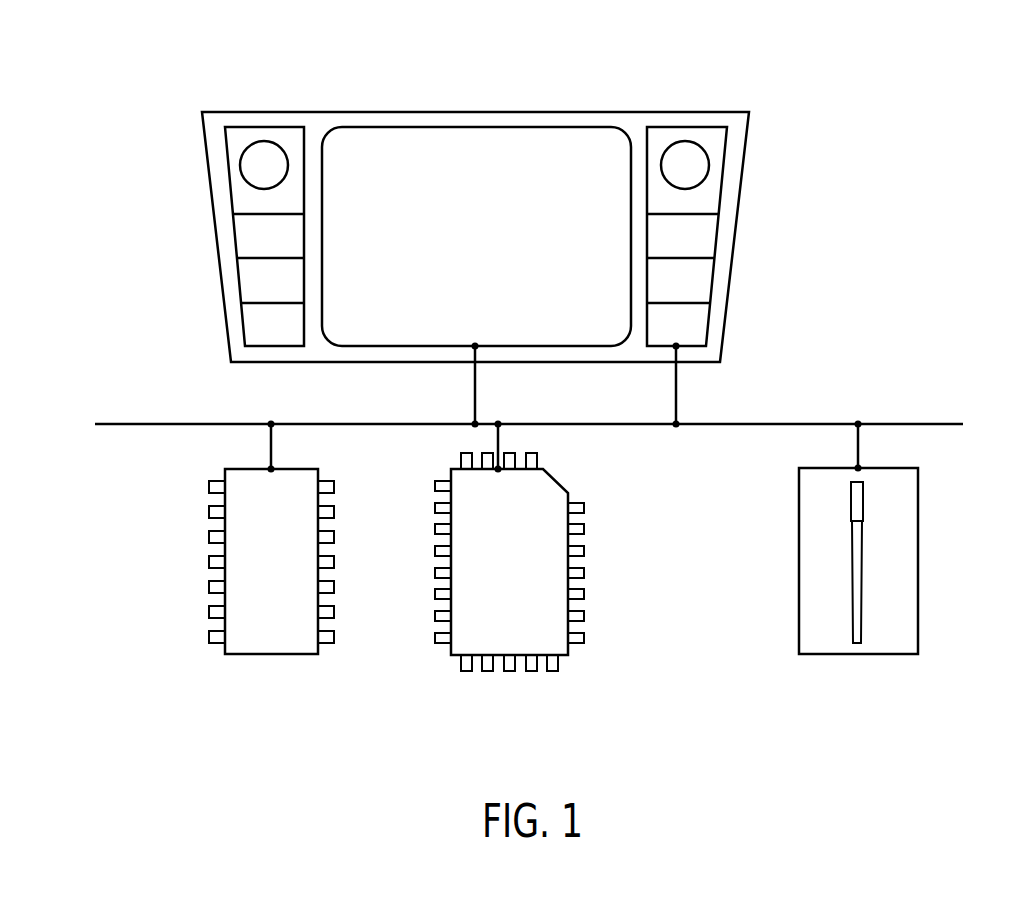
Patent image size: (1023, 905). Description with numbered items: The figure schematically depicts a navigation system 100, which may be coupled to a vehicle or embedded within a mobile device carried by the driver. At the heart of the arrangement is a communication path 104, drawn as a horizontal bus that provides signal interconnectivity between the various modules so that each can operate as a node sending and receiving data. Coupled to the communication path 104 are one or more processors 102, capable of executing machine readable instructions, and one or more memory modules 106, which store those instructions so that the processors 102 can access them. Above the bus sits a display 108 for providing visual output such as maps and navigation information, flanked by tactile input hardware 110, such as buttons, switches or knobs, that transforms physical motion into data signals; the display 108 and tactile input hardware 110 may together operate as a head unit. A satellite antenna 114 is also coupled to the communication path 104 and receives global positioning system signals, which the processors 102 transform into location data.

The navigation system 100 is at (936, 108).
The processors 102 is at (452, 657).
The communication path 104 is at (122, 423).
The memory modules 106 is at (272, 656).
The display 108 is at (462, 138).
The tactile input hardware 110 is at (228, 138).
The satellite antenna 114 is at (858, 656).